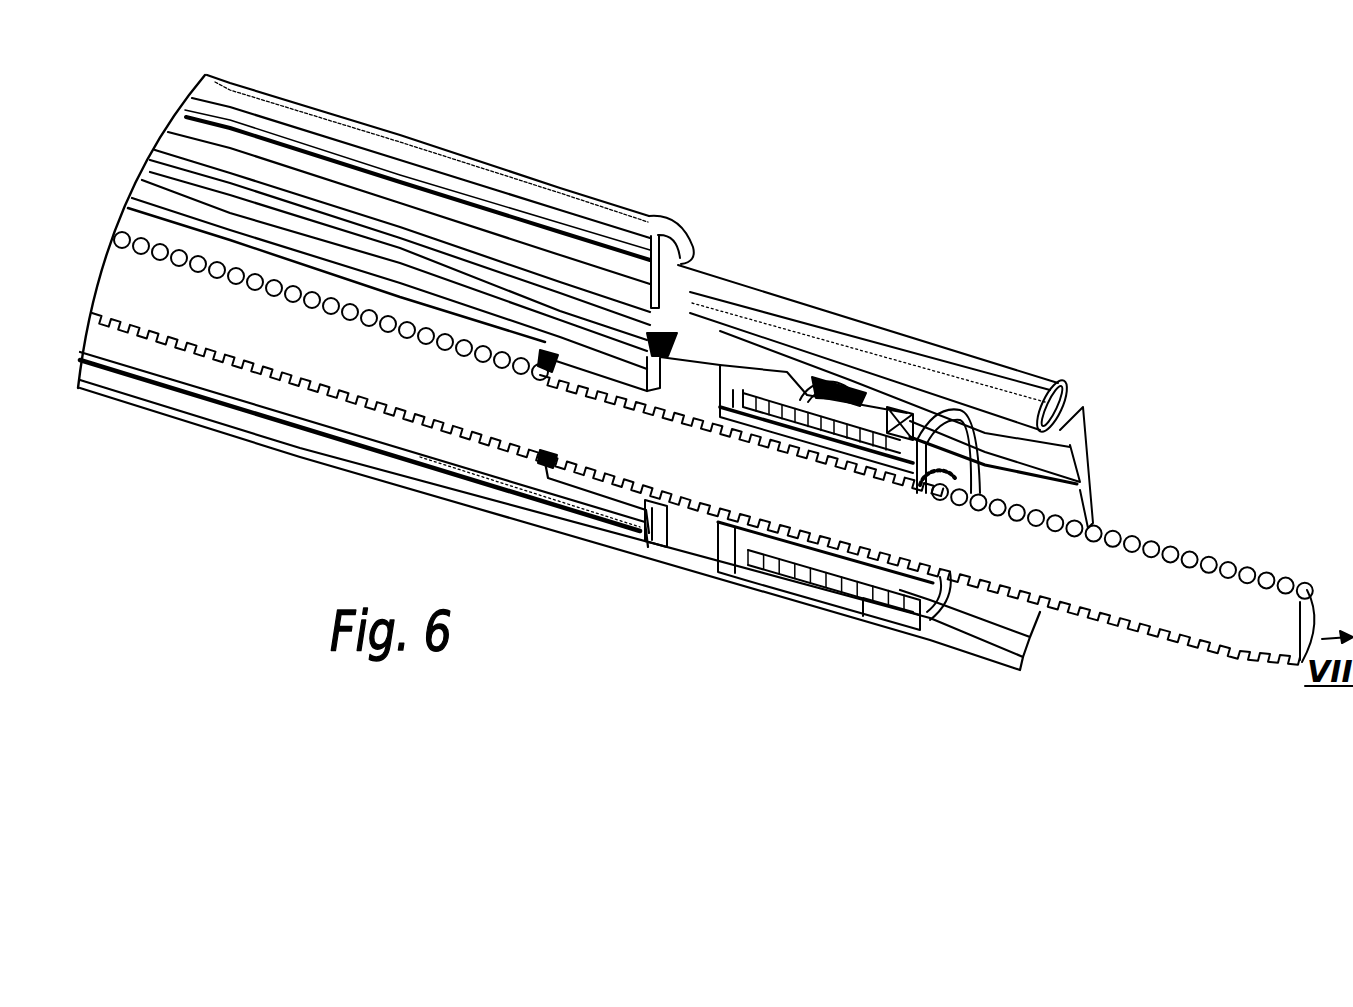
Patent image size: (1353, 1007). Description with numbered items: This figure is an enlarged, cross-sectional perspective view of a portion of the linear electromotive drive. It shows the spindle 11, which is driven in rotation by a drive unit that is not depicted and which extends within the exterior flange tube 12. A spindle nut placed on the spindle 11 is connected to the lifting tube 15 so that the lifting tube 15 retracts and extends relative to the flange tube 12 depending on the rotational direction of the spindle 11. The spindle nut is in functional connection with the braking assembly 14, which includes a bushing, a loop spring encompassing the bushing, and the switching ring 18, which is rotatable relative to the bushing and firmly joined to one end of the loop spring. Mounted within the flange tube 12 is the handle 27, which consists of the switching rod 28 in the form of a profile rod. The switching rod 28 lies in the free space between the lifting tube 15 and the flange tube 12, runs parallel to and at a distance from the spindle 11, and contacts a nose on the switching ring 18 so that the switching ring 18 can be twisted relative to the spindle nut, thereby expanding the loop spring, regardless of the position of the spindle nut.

The spindle 11 is at (1218, 607).
The flange tube 12 is at (666, 223).
The braking assembly 14 is at (848, 402).
The lifting tube 15 is at (425, 457).
The switching ring 18 is at (900, 437).
The handle 27 is at (755, 286).
The switching rod 28 is at (1023, 387).